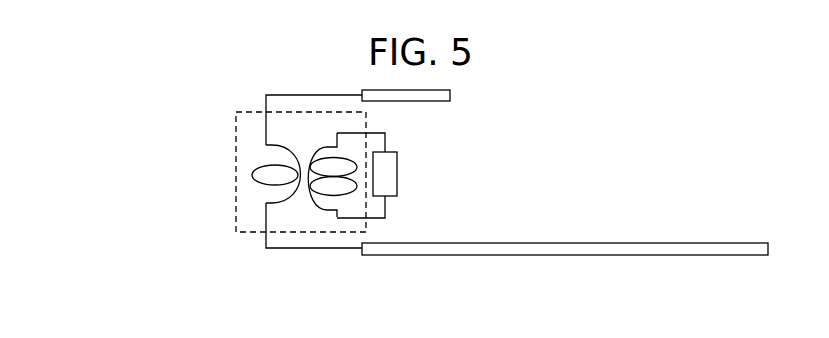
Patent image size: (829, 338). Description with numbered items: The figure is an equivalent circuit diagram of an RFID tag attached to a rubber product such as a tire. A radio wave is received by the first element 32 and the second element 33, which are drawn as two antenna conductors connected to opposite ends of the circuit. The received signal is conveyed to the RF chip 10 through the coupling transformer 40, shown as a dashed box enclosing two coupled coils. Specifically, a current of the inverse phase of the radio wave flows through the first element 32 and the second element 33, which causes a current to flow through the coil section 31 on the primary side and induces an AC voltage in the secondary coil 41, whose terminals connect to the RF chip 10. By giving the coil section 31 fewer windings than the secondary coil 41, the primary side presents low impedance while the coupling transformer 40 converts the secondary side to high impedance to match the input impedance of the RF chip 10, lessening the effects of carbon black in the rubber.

The coupling transformer 40 is at (235, 160).
The coil section 31 is at (253, 181).
The secondary coil 41 is at (328, 193).
The RF chip 10 is at (382, 168).
The second element 33 is at (442, 97).
The first element 32 is at (523, 245).